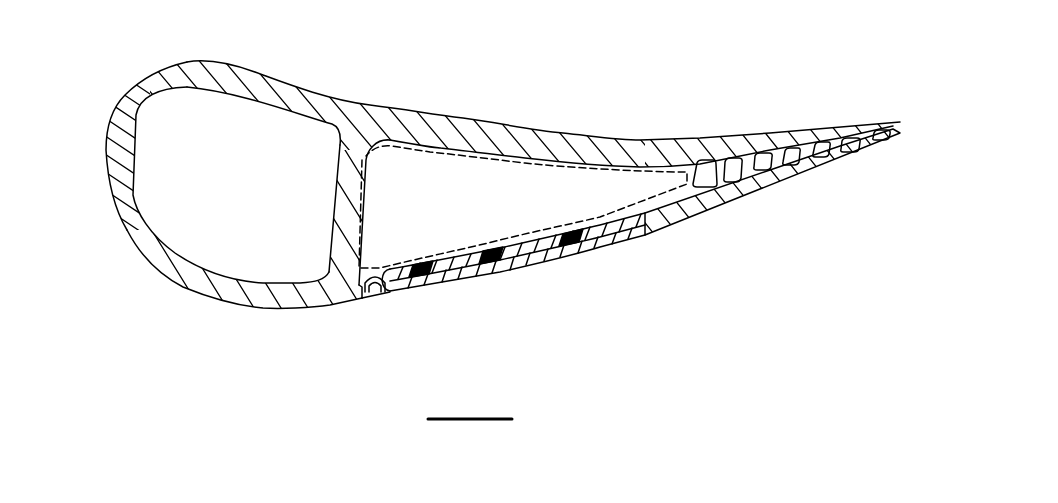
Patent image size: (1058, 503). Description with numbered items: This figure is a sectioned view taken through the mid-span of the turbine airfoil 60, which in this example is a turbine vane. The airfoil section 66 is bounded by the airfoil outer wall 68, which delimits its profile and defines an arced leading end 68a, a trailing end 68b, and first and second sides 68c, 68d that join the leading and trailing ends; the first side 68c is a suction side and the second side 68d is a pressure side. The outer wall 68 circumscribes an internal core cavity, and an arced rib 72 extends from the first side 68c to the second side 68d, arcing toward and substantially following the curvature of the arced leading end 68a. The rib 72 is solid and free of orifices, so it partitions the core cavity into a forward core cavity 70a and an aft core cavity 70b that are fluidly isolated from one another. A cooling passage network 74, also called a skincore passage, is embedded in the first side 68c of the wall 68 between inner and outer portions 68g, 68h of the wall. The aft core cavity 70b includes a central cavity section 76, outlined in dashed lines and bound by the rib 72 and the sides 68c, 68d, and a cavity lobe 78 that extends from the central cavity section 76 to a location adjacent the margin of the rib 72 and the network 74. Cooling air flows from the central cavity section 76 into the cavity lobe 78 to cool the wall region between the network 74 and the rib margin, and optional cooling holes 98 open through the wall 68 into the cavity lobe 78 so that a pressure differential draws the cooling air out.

The turbine airfoil 60 is at (529, 251).
The airfoil section 66 is at (237, 56).
The airfoil outer wall 68 is at (282, 300).
The arced leading end 68a is at (112, 112).
The trailing end 68b is at (902, 135).
The first side 68c is at (240, 308).
The second side 68d is at (355, 102).
The inner portion of the airfoil wall 68g is at (556, 232).
The outer portion of the airfoil wall 68h is at (587, 252).
The forward core cavity 70a is at (253, 205).
The aft core cavity 70b is at (448, 227).
The arced rib 72 is at (338, 212).
The cooling passage network 74 is at (465, 262).
The central cavity section 76 is at (432, 152).
The cavity lobe 78 is at (377, 298).
The cooling holes 98 is at (369, 298).